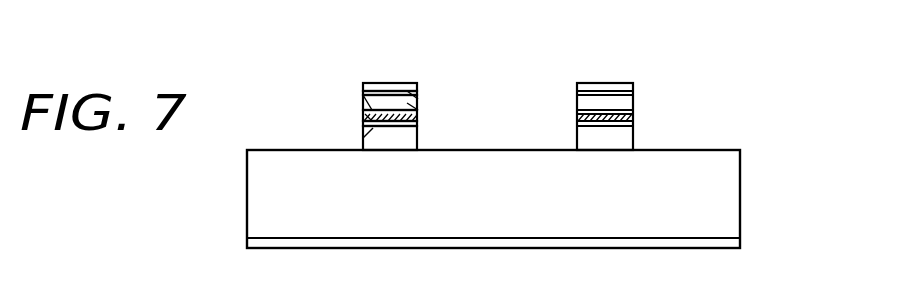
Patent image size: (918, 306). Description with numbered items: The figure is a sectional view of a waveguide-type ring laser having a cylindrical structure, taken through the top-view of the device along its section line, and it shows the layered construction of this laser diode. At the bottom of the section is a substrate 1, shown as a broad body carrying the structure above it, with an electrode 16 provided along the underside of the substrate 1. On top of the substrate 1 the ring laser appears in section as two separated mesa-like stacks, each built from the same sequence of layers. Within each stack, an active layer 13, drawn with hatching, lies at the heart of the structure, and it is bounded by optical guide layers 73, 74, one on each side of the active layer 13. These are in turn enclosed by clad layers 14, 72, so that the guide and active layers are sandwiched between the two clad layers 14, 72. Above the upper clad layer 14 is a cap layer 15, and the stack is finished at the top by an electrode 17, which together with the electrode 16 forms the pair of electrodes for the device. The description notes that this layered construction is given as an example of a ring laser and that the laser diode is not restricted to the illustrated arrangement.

The substrate 1 is at (732, 193).
The electrode 16 is at (732, 240).
The electrode 17 is at (397, 83).
The cap layer 15 is at (418, 95).
The clad layer 14 is at (418, 110).
The optical guide layer 73 is at (363, 95).
The active layer 13 is at (363, 117).
The optical guide layer 74 is at (363, 138).
The clad layer 72 is at (418, 139).